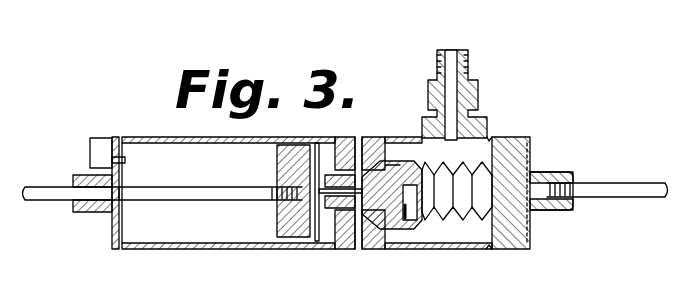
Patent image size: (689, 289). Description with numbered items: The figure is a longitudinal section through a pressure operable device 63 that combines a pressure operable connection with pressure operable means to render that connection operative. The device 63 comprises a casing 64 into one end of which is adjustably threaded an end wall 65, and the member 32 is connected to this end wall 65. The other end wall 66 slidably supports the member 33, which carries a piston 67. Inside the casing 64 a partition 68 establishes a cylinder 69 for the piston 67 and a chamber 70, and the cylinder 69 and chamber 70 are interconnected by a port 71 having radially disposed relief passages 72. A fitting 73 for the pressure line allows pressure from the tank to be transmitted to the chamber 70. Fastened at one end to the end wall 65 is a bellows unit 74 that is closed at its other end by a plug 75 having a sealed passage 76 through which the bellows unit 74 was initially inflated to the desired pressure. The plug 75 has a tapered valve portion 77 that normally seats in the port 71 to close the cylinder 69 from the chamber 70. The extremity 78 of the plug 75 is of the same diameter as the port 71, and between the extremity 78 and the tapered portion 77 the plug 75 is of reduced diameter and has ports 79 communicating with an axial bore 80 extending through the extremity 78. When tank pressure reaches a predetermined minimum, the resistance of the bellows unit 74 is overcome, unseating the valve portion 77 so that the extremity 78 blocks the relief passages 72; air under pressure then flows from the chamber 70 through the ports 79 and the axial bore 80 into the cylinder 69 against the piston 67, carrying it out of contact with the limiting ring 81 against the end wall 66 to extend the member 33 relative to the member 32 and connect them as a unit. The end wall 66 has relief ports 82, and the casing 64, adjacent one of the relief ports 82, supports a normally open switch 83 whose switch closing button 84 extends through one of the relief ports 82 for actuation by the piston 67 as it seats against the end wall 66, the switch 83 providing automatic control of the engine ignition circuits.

The member 32 is at (597, 184).
The member 33 is at (48, 188).
The device 63 is at (284, 252).
The casing 64 is at (350, 248).
The end wall 65 is at (531, 160).
The end wall 66 is at (120, 178).
The piston 67 is at (276, 215).
The partition 68 is at (345, 215).
The cylinder 69 is at (180, 242).
The chamber 70 is at (458, 230).
The port 71 is at (372, 137).
The relief passages 72 is at (365, 118).
The fitting 73 is at (470, 66).
The bellows unit 74 is at (466, 215).
The plug 75 is at (403, 150).
The sealed passage 76 is at (410, 230).
The tapered valve portion 77 is at (406, 220).
The extremity 78 is at (342, 150).
The ports 79 is at (360, 212).
The axial bore 80 is at (332, 210).
The limiting ring 81 is at (317, 142).
The relief ports 82 is at (118, 240).
The switch 83 is at (97, 141).
The switch closing button 84 is at (126, 160).